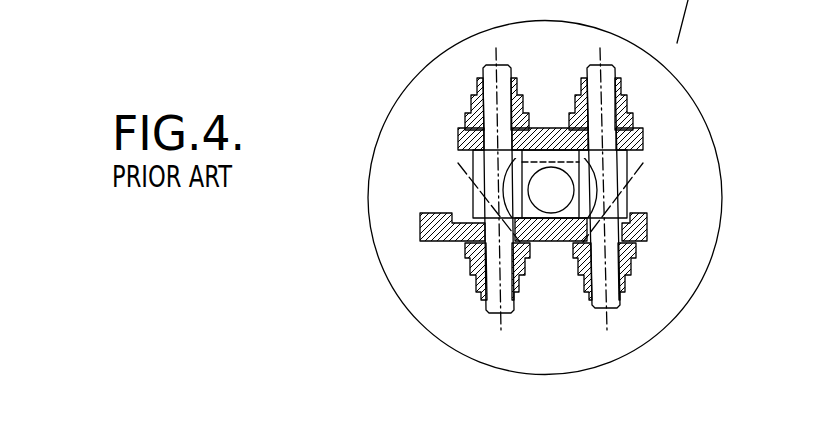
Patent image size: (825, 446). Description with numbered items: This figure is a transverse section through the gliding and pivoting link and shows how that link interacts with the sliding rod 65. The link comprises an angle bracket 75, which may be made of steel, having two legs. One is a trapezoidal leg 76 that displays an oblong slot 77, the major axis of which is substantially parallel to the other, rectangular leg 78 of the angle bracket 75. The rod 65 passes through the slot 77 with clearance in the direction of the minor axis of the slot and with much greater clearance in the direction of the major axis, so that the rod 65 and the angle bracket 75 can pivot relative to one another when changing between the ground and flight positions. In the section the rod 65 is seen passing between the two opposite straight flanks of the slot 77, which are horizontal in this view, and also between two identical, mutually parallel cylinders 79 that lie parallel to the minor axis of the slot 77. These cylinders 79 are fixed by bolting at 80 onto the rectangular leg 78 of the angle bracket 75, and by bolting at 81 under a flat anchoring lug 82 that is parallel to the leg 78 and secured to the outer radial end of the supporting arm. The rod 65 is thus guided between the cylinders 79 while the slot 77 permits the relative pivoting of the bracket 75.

The sliding rod 65 is at (560, 192).
The angle bracket 75 is at (640, 133).
The trapezoidal leg 76 is at (458, 165).
The oblong slot 77 is at (530, 243).
The rectangular leg 78 is at (553, 128).
The cylinders 79 is at (473, 205).
The bolting 80 is at (470, 105).
The bolting 81 is at (473, 265).
The flat anchoring lug 82 is at (642, 225).